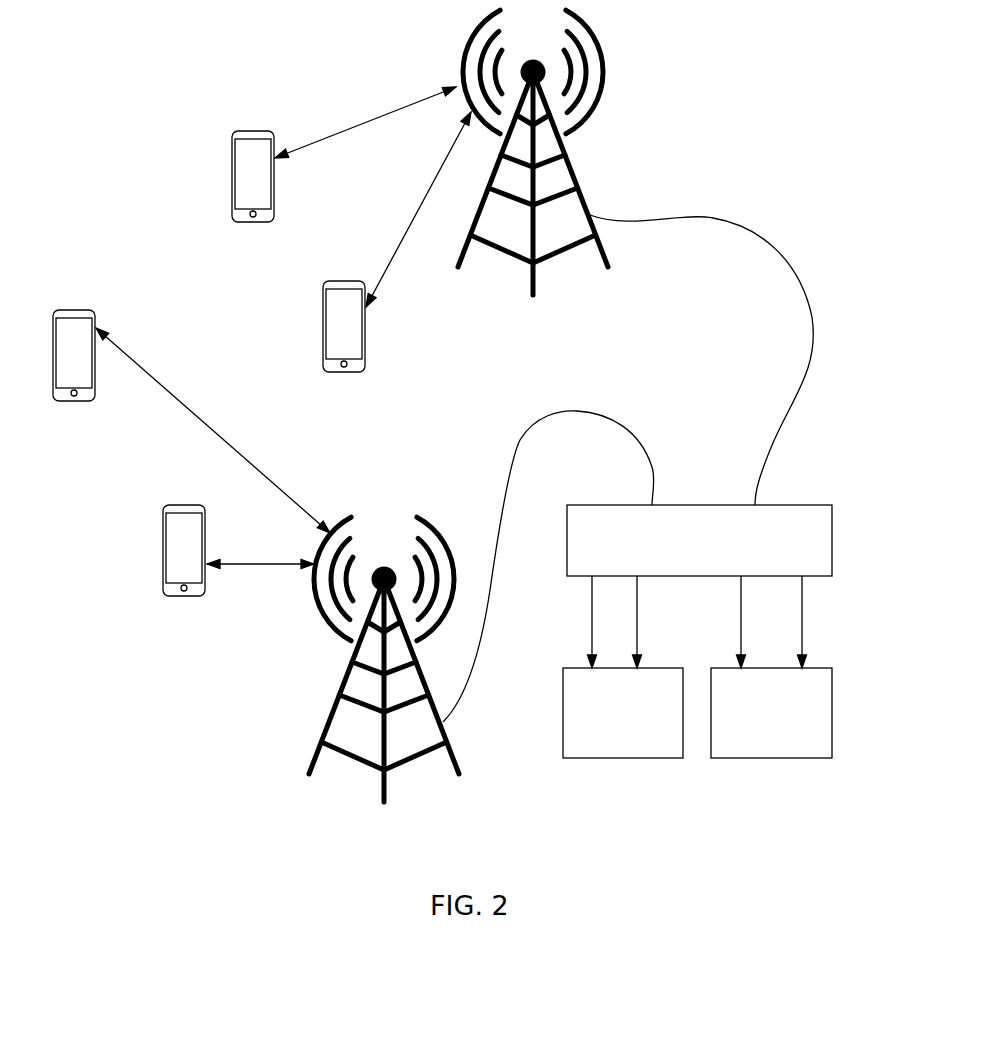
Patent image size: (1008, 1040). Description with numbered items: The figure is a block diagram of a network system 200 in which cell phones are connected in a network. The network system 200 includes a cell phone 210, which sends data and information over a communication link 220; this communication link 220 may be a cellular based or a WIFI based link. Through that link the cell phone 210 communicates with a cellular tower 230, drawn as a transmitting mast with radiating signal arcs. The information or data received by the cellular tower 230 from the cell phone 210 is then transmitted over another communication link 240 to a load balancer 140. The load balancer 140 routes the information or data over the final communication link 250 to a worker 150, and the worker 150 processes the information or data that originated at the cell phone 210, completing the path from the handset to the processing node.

The network system 200 is at (145, 107).
The cell phone 210 is at (71, 340).
The communication link 220 is at (245, 457).
The cellular tower 230 is at (425, 675).
The communication link 240 is at (510, 497).
The final communication link 250 is at (592, 630).
The load balancer 140 is at (685, 561).
The worker 150 is at (609, 731).